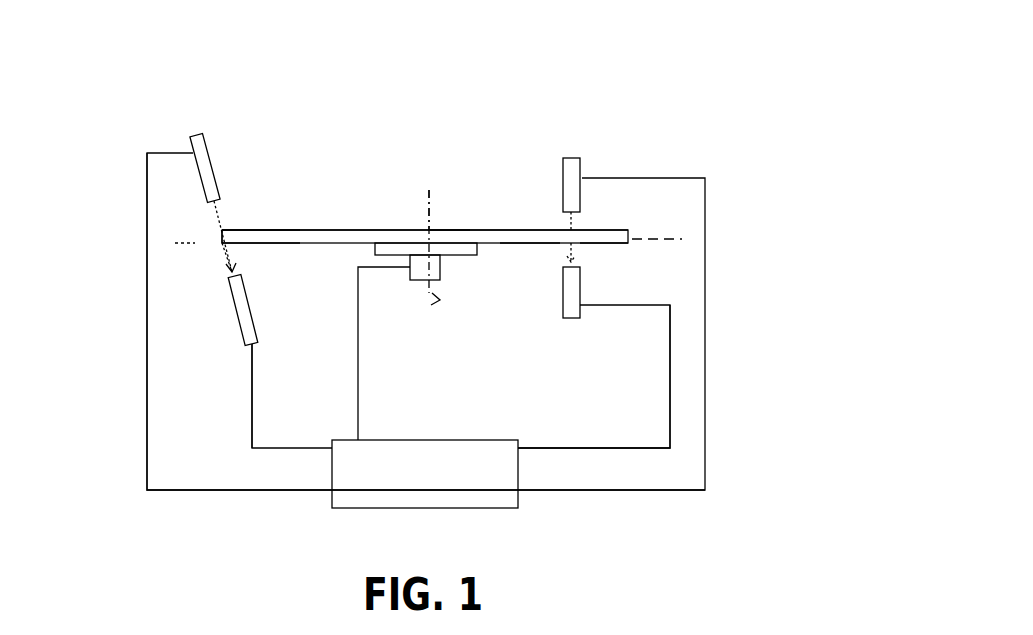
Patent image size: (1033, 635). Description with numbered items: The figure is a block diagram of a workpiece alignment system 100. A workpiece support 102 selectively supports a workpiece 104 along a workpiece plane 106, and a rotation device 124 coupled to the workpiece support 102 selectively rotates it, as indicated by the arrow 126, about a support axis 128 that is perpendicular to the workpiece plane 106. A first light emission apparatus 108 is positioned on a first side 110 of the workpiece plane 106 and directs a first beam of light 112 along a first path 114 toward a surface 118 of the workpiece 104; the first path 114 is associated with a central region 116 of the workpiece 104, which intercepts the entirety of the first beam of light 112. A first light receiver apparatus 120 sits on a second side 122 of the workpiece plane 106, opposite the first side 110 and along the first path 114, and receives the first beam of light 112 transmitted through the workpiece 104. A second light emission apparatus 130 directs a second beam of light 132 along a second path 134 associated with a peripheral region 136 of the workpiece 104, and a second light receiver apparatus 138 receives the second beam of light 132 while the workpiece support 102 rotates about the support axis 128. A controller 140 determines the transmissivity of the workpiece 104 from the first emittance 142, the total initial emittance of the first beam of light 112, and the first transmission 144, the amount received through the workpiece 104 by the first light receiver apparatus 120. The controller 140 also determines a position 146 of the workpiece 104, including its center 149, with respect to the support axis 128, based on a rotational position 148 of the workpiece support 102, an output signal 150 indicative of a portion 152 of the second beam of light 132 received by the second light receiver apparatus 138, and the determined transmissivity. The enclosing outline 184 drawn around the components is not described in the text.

The workpiece alignment system 100 is at (778, 59).
The workpiece support 102 is at (467, 256).
The workpiece 104 is at (279, 229).
The workpiece plane 106 is at (675, 234).
The first light emission apparatus 108 is at (563, 168).
The first side 110 is at (310, 212).
The first beam of light 112 is at (566, 222).
The first path 114 is at (595, 215).
The central region 116 is at (540, 262).
The surface 118 is at (457, 210).
The first light receiver apparatus 120 is at (570, 320).
The second side 122 is at (609, 258).
The rotation device 124 is at (442, 282).
The arrow 126 is at (440, 300).
The support axis 128 is at (427, 222).
The second light emission apparatus 130 is at (204, 140).
The second beam of light 132 is at (228, 253).
The second path 134 is at (205, 215).
The peripheral region 136 is at (205, 234).
The second light receiver apparatus 138 is at (237, 312).
The controller 140 is at (375, 508).
The first emittance 142 is at (272, 262).
The first transmission 144 is at (600, 448).
The position 146 is at (264, 210).
The rotational position 148 is at (358, 358).
The center 149 is at (431, 228).
The output signal 150 is at (252, 398).
The portion 152 is at (230, 243).
The housing 184 is at (147, 388).